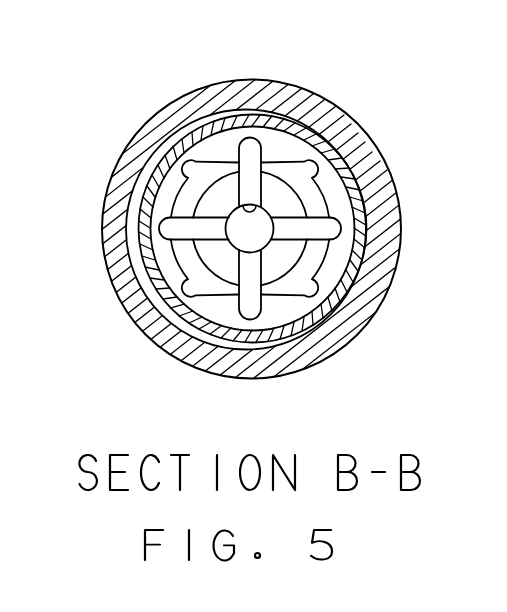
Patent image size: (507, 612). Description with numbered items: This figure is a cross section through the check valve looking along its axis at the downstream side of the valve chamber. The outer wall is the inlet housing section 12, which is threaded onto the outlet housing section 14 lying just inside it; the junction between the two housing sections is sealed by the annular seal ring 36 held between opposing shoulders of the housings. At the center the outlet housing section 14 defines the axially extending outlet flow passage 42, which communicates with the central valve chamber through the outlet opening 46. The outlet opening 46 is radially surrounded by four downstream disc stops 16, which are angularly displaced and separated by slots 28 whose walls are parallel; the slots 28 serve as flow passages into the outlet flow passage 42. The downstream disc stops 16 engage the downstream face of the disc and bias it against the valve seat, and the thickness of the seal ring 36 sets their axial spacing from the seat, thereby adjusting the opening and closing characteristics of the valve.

The inlet housing section 12 is at (363, 318).
The outlet housing section 14 is at (330, 163).
The annular seal ring 36 is at (360, 238).
The outlet flow passage 42 is at (245, 239).
The slots 28 is at (251, 278).
The downstream disc stops 16 is at (263, 206).
The outlet opening 46 is at (248, 212).